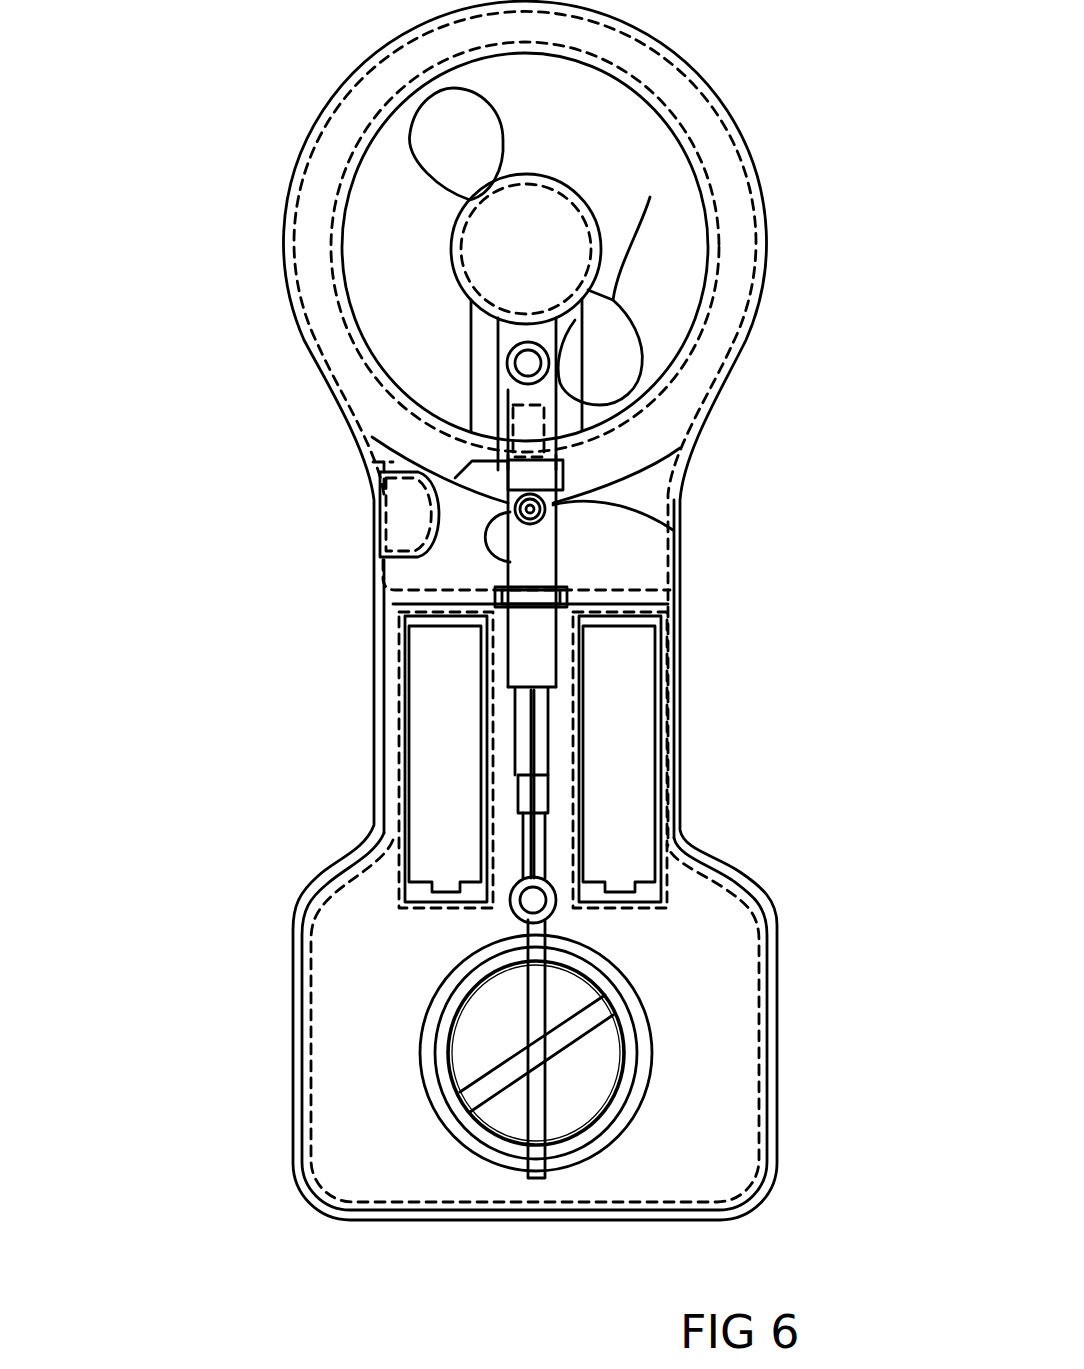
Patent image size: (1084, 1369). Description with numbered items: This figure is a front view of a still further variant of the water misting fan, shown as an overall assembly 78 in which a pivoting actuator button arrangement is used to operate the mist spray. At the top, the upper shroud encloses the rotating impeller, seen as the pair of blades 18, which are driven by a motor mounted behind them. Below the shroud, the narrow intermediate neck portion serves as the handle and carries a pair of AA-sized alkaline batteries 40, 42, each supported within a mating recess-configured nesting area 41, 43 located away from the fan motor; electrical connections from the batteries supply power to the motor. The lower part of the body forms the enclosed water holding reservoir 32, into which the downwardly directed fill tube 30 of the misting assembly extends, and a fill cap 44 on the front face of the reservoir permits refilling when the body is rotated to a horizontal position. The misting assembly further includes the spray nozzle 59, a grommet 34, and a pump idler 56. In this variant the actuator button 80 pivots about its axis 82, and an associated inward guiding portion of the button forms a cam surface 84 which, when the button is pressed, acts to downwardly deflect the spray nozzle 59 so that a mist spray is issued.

The blades 18 is at (500, 117).
The fill tube 30 is at (543, 1098).
The reservoir 32 is at (712, 948).
The grommet 34 is at (600, 607).
The battery 40 is at (430, 715).
The nesting area 41 is at (393, 848).
The battery 42 is at (625, 724).
The nesting area 43 is at (663, 868).
The fill cap 44 is at (477, 1093).
The pump idler 56 is at (673, 530).
The nozzle 59 is at (518, 362).
The fan assembly 78 is at (191, 493).
The actuator button 80 is at (377, 503).
The axis of actuator button 82 is at (513, 905).
The cam surface 84 is at (487, 540).